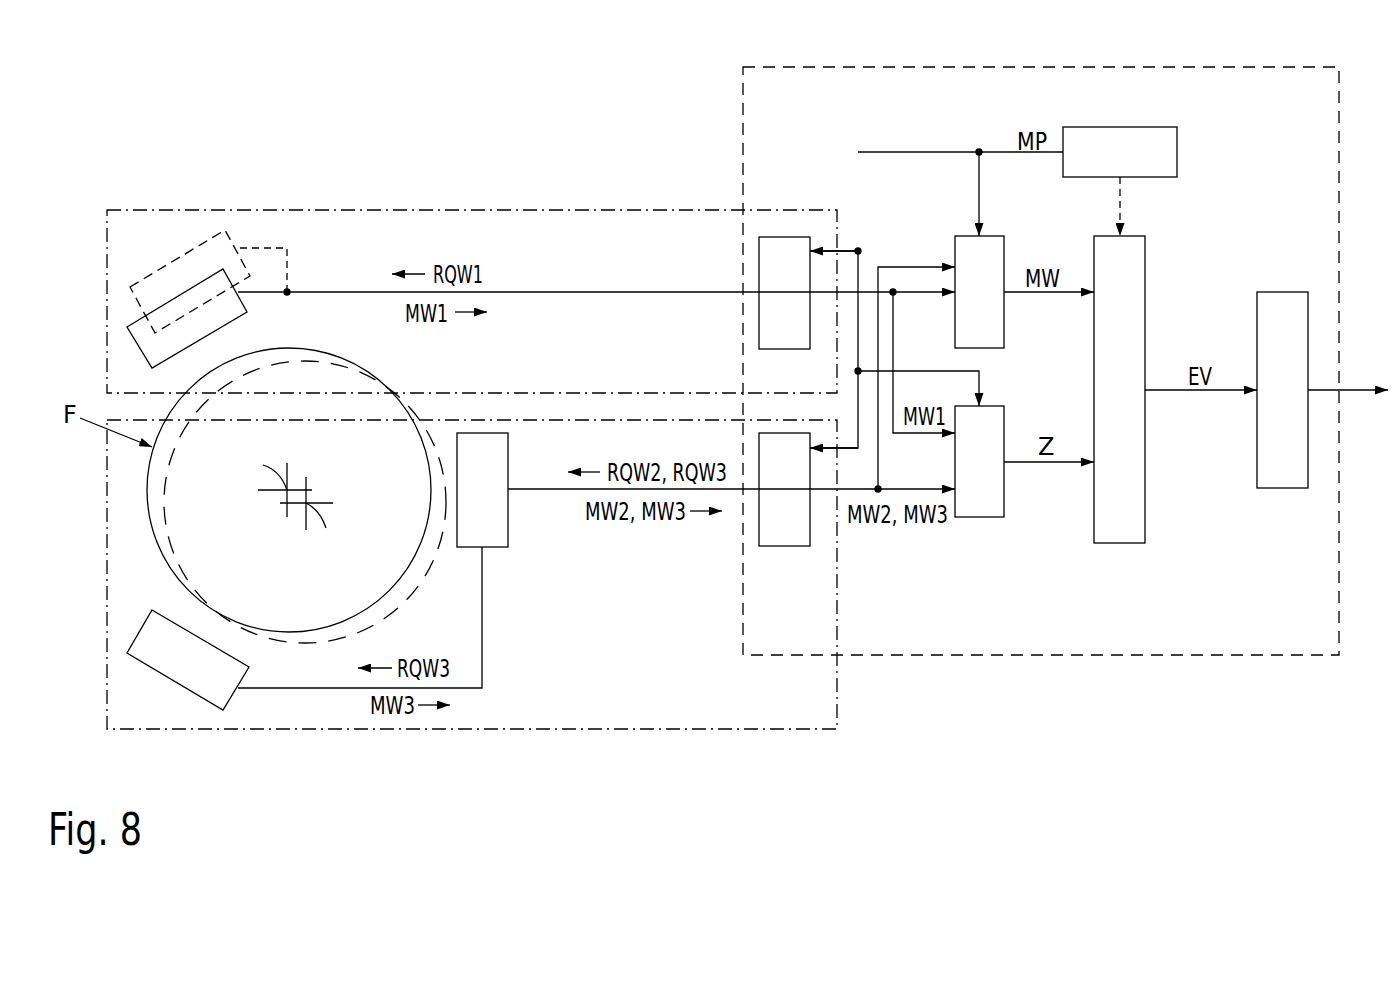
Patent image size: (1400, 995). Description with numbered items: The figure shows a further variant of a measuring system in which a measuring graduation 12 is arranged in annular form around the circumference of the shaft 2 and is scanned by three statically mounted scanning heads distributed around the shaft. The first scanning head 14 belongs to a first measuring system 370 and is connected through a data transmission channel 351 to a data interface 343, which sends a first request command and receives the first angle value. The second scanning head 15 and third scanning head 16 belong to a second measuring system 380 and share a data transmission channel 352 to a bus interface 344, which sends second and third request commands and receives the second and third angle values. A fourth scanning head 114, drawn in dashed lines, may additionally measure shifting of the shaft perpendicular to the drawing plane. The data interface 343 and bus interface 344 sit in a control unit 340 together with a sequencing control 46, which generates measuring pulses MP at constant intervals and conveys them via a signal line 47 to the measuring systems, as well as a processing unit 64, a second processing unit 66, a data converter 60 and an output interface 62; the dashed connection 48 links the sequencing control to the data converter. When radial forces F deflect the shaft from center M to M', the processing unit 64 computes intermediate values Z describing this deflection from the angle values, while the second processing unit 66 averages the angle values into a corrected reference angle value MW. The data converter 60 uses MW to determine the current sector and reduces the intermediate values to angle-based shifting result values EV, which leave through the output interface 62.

The shaft 2 is at (245, 490).
The measuring graduation 12 is at (146, 488).
The first scanning head 14 is at (138, 352).
The fourth scanning head 114 is at (140, 305).
The second scanning head 15 is at (508, 528).
The third scanning head 16 is at (173, 682).
The sequencing control 46 is at (1177, 154).
The signal line 47 is at (910, 152).
The connection line 48 is at (1121, 212).
The data converter 60 is at (1145, 282).
The output interface 62 is at (1280, 292).
The processing unit 64 is at (977, 517).
The second processing unit 66 is at (965, 236).
The control unit 340 is at (1095, 655).
The data interface 343 is at (759, 252).
The bus interface 344 is at (783, 546).
The data transmission channel 351 is at (331, 290).
The data transmission channel 352 is at (541, 487).
The measuring system 370 is at (522, 210).
The measuring system 380 is at (610, 729).